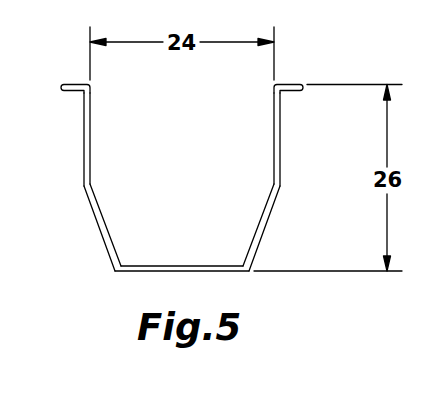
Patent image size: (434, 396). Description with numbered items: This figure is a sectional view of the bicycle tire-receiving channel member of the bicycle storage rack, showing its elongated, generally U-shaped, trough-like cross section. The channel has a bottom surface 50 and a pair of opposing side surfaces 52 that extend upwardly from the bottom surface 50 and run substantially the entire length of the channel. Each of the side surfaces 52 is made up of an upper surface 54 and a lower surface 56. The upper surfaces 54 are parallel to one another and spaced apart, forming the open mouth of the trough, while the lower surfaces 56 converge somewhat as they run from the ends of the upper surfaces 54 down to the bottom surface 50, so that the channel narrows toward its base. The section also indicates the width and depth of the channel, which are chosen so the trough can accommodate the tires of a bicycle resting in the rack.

The bottom surface 50 is at (191, 207).
The side surfaces 52 is at (84, 184).
The upper surfaces 54 is at (84, 110).
The lower surfaces 56 is at (96, 218).